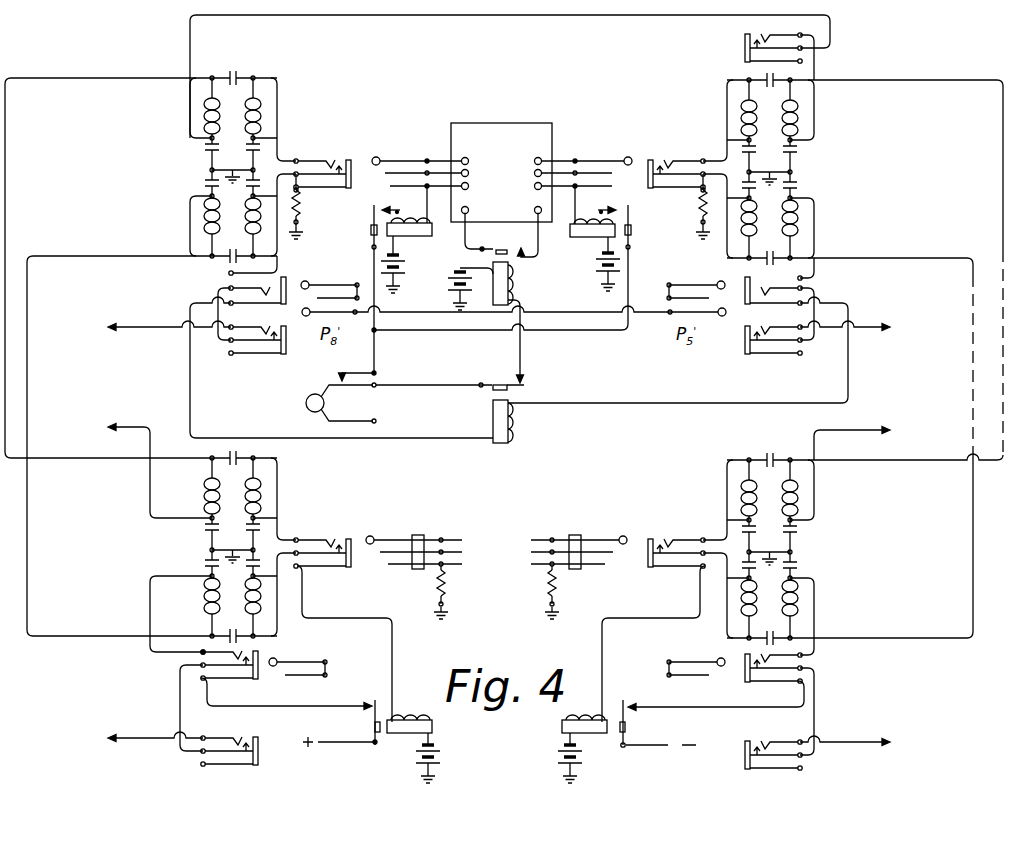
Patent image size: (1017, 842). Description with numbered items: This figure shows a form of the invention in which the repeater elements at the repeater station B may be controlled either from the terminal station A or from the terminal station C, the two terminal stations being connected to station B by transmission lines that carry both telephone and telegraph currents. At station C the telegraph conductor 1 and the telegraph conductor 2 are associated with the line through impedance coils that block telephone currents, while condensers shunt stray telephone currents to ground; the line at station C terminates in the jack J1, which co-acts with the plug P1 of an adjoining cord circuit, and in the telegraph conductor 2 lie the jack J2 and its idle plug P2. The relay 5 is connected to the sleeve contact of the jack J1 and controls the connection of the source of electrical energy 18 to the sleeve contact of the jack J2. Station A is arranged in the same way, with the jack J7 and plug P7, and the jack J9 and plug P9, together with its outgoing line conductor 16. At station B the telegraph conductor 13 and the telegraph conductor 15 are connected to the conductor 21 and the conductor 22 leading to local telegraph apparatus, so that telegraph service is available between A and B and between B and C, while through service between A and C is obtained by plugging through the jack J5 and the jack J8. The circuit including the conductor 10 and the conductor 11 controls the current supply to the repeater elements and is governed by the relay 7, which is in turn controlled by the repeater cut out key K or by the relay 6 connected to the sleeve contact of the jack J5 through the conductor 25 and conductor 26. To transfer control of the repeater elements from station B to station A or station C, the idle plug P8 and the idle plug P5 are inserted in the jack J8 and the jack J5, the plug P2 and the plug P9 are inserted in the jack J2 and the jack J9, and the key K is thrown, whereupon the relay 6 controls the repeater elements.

The telegraph conductor 1 is at (859, 432).
The telegraph conductor 2 is at (813, 622).
The relay 5 is at (585, 708).
The relay 6 is at (510, 420).
The relay 7 is at (508, 299).
The conductor 10 is at (467, 233).
The conductor 11 is at (531, 232).
The telegraph conductor 13 is at (812, 241).
The telegraph conductor 15 is at (190, 233).
The line conductor 16 is at (848, 735).
The source of electrical energy 18 is at (672, 763).
The conductor 21 is at (860, 313).
The conductor 22 is at (148, 313).
The conductor 25 is at (720, 392).
The conductor 26 is at (447, 425).
The terminal station A is at (178, 538).
The station B is at (510, 76).
The terminal station C is at (822, 554).
The repeater cut out key K is at (328, 398).
The jack J1 is at (678, 543).
The jack J2 is at (721, 711).
The jack J5 is at (760, 308).
The jack J7 is at (317, 543).
The jack J8 is at (258, 279).
The jack J9 is at (216, 686).
The plug P1 is at (579, 568).
The idle plug P2 is at (696, 686).
The idle plug P5 is at (696, 279).
The plug P7 is at (414, 568).
The idle plug P8 is at (330, 279).
The plug P9 is at (313, 682).